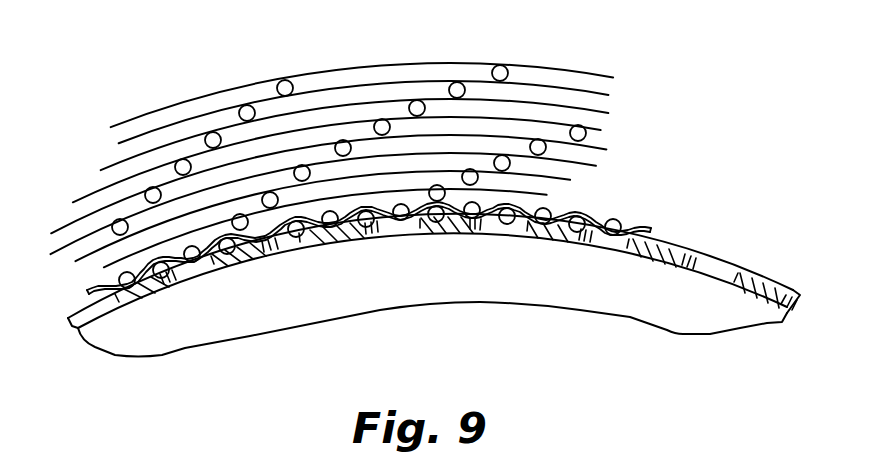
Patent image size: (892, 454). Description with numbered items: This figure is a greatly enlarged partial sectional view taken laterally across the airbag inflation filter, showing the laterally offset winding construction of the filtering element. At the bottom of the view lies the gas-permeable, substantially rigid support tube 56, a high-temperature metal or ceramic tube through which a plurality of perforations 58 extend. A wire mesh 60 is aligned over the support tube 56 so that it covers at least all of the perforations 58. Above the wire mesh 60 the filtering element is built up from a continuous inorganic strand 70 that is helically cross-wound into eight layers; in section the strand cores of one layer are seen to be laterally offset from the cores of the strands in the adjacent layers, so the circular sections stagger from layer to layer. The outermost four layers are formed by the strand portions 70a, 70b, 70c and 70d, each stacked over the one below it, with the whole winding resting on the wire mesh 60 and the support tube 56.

The support tube 56 is at (147, 303).
The perforations 58 is at (297, 243).
The wire mesh 60 is at (642, 231).
The strand 70 is at (148, 191).
The strand (outermost layer) 70a is at (179, 164).
The strand (second outer layer) 70b is at (209, 136).
The strand (third outer layer) 70c is at (244, 108).
The strand (fourth outer layer) 70d is at (287, 83).